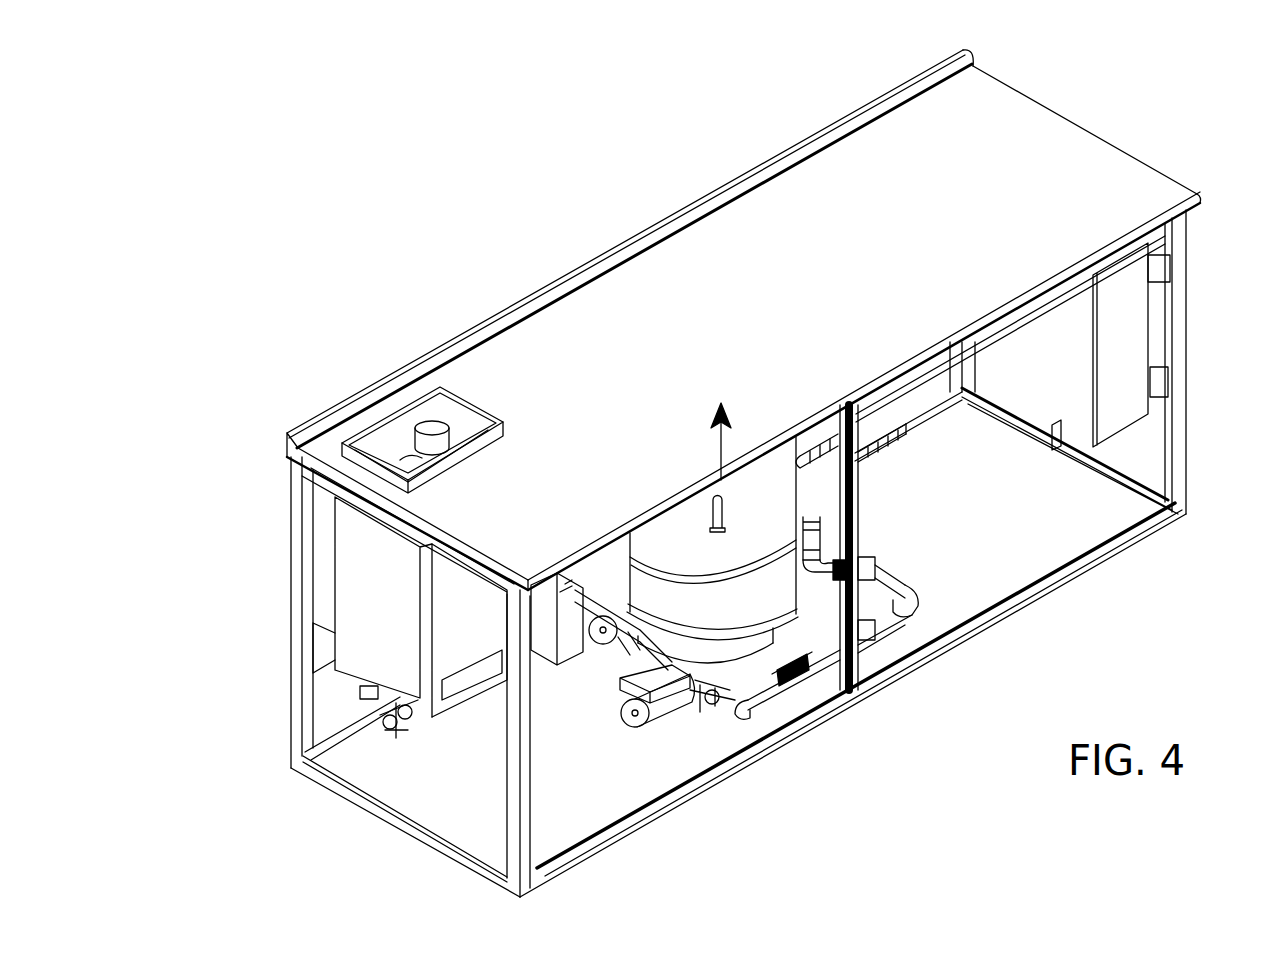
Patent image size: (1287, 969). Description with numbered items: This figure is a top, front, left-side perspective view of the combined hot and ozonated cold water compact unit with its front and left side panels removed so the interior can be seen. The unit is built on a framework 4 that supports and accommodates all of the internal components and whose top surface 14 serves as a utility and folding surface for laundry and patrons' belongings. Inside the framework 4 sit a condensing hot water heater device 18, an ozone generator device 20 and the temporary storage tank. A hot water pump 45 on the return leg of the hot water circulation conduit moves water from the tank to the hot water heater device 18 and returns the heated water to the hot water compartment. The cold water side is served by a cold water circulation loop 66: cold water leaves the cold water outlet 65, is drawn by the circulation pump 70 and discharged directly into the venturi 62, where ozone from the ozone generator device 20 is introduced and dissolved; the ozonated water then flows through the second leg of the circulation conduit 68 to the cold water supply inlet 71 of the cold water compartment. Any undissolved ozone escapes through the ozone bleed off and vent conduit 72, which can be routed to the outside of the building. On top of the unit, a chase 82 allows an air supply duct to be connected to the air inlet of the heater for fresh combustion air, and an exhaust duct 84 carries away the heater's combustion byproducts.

The framework 4 is at (520, 797).
The top surface 14 is at (948, 237).
The condensing hot water heater device 18 is at (350, 607).
The ozone generator device 20 is at (1128, 343).
The hot water pump 45 is at (598, 640).
The venturi 62 is at (833, 657).
The cold water outlet 65 is at (635, 587).
The cold water circulation loop 66 is at (935, 598).
The second leg of the circulation conduit 68 is at (893, 630).
The circulation pump 70 is at (663, 720).
The cold water supply inlet 71 is at (793, 527).
The ozone bleed off and vent conduit 72 is at (711, 513).
The chase 82 is at (463, 402).
The exhaust duct 84 is at (427, 418).